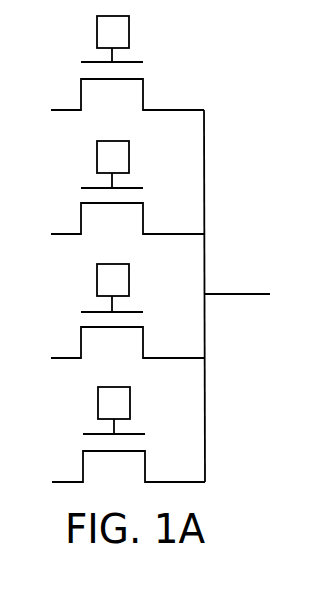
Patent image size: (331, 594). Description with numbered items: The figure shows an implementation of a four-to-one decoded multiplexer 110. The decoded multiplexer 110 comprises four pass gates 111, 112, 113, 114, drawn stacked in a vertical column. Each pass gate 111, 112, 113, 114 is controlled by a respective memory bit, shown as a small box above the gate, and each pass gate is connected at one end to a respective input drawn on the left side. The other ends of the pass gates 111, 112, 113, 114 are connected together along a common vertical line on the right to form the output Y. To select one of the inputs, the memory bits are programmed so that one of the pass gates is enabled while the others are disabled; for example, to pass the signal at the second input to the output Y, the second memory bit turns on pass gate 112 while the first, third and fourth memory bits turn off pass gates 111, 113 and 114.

The decoded multiplexer 110 is at (223, 26).
The pass gate 111 is at (127, 86).
The pass gate 112 is at (128, 211).
The pass gate 113 is at (128, 335).
The pass gate 114 is at (128, 458).